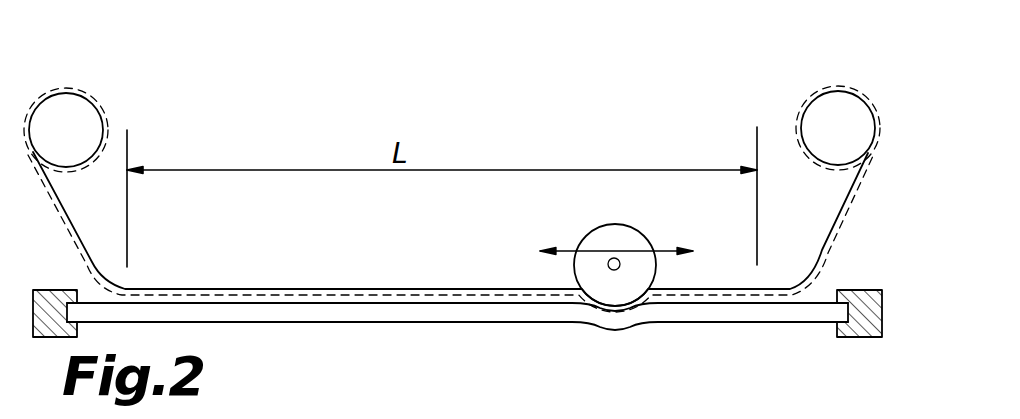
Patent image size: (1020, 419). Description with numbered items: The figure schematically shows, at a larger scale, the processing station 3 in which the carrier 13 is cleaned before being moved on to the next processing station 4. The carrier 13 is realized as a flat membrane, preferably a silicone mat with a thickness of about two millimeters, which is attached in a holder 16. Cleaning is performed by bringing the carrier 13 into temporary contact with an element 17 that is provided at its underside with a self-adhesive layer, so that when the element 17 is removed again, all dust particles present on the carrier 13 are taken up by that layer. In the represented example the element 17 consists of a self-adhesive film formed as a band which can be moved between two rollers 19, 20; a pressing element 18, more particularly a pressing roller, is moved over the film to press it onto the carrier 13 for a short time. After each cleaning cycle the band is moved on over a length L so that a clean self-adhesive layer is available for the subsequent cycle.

The processing station 3 is at (687, 100).
The processing station 4 is at (745, 418).
The carrier 13 is at (703, 315).
The holder 16 is at (863, 290).
The element 17 is at (820, 240).
The pressing element 18 is at (598, 236).
The roller 19 is at (822, 110).
The roller 20 is at (83, 122).